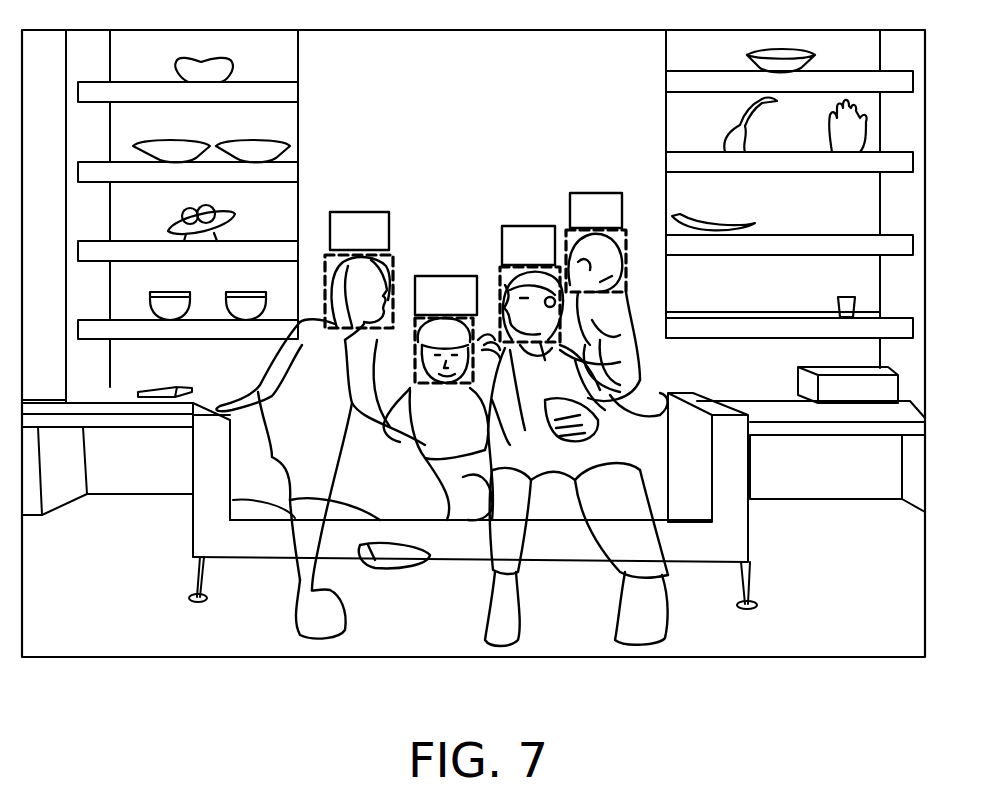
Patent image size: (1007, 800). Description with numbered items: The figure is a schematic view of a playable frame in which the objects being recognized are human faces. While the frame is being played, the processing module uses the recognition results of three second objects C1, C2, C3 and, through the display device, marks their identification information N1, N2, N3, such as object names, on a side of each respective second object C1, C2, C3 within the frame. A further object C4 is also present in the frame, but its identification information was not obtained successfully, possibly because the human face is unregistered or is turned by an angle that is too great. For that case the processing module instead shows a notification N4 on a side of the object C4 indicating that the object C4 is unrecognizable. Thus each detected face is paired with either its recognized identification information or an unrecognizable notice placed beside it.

The identification information N1 is at (358, 212).
The second object C1 is at (393, 258).
The identification information N2 is at (440, 276).
The second object C2 is at (412, 384).
The identification information N3 is at (522, 226).
The second object C3 is at (537, 343).
The notification N4 is at (586, 193).
The object C4 is at (628, 260).